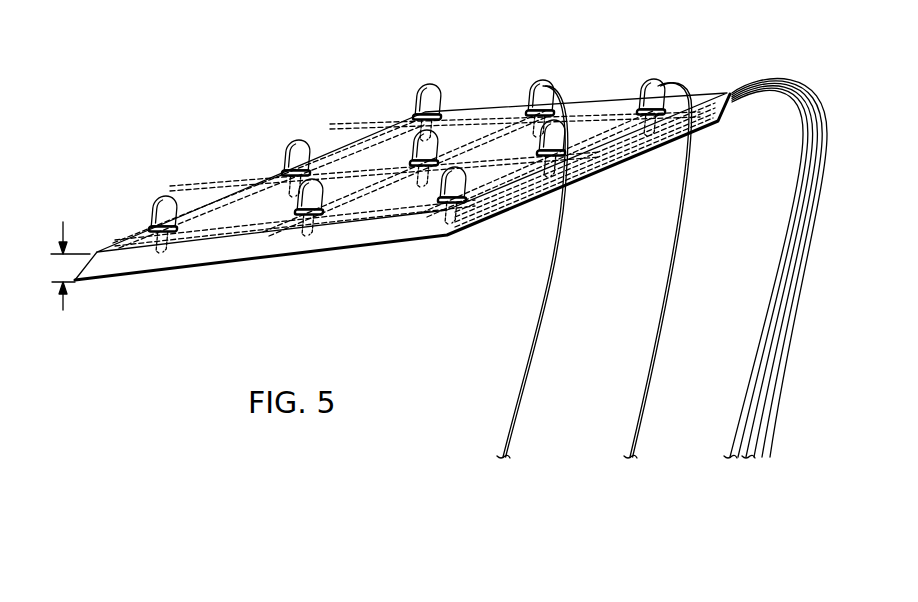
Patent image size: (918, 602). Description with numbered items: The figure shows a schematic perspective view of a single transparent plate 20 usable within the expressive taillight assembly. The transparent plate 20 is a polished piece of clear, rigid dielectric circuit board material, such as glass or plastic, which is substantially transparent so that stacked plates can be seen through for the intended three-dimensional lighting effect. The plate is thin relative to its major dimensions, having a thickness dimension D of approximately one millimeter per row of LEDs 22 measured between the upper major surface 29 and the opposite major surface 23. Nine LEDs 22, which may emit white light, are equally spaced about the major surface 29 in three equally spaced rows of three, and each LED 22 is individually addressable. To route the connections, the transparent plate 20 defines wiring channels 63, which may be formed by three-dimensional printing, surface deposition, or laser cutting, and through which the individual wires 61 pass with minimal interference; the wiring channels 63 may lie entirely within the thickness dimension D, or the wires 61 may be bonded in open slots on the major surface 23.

The transparent plate 20 is at (371, 146).
The LEDs 22 is at (538, 82).
The major surface 23 is at (235, 262).
The major surface 29 is at (249, 200).
The wires 61 is at (534, 315).
The wiring channels 63 is at (383, 160).
The thickness dimension D is at (65, 223).